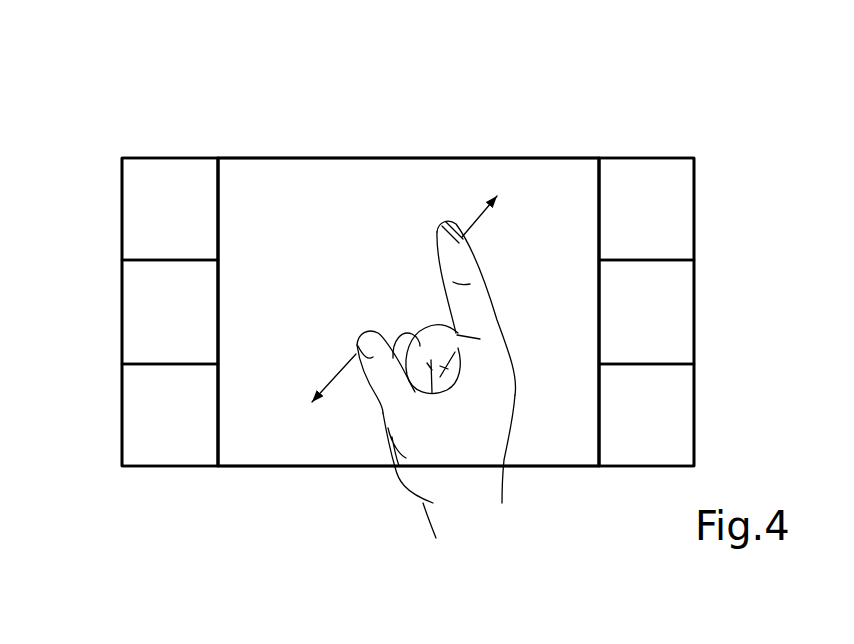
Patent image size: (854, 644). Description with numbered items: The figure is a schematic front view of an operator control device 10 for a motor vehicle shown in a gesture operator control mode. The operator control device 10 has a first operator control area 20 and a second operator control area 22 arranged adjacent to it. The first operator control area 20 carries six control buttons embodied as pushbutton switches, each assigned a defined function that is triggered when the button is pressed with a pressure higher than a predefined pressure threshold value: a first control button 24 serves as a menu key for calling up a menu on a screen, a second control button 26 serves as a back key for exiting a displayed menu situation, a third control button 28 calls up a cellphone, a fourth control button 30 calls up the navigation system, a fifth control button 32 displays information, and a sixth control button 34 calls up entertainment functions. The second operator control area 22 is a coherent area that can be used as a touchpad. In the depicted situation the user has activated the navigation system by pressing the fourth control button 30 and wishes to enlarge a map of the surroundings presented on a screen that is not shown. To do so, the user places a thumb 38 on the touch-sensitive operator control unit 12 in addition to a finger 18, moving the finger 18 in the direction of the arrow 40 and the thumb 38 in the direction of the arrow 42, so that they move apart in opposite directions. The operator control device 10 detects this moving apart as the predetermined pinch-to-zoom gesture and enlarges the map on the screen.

The operator control device 10 is at (112, 119).
The touch-sensitive operator control unit 12 is at (283, 478).
The finger 18 is at (445, 223).
The first operator control area 20 is at (170, 152).
The second operator control area 22 is at (407, 226).
The first control button 24 is at (137, 240).
The second control button 26 is at (137, 345).
The third control button 28 is at (137, 450).
The fourth control button 30 is at (677, 243).
The fifth control button 32 is at (677, 345).
The sixth control button 34 is at (677, 448).
The thumb 38 is at (376, 330).
The arrow 40 is at (475, 222).
The arrow 42 is at (335, 369).